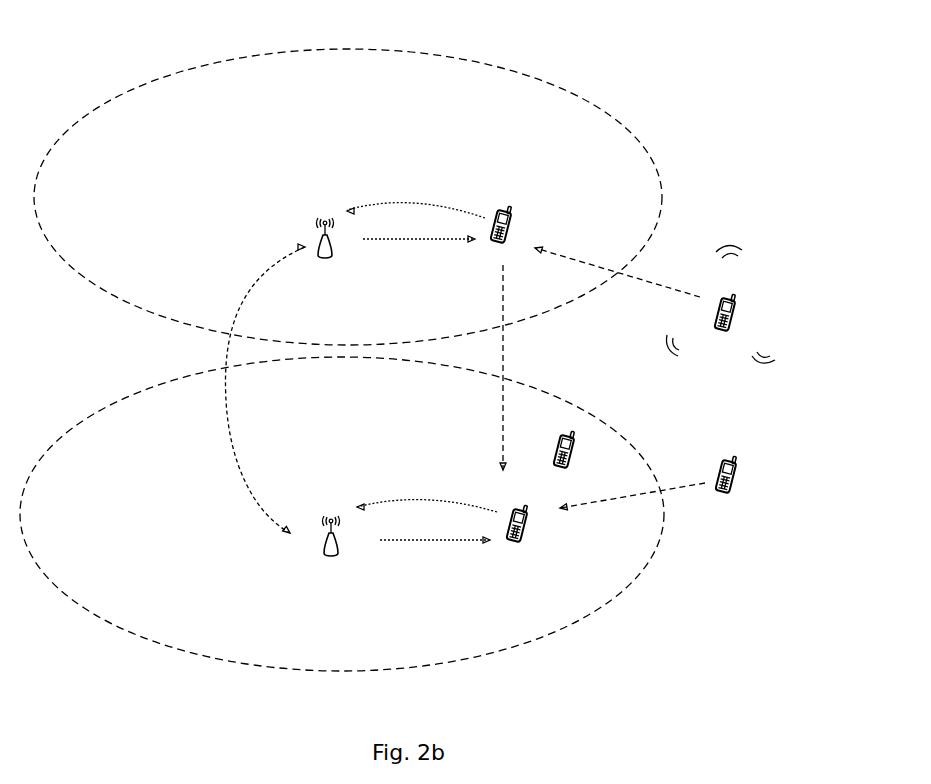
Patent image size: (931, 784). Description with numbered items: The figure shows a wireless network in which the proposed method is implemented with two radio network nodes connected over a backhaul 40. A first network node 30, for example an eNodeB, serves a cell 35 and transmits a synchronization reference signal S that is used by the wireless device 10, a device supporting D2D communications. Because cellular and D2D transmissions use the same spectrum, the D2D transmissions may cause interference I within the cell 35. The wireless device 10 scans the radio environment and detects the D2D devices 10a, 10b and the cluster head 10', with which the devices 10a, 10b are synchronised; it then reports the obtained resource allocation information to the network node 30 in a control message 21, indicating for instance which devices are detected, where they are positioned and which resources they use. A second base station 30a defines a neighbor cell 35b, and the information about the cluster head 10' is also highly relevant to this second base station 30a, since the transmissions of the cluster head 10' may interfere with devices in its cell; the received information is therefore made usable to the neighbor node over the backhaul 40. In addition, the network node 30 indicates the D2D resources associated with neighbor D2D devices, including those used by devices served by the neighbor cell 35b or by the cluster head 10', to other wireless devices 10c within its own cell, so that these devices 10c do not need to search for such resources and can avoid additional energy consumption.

The neighbor cell 35b is at (118, 97).
The cell 35 is at (92, 417).
The second base station 30a is at (318, 246).
The network node 30 is at (339, 548).
The backhaul 40 is at (228, 427).
The control message 21 is at (422, 366).
The synchronization reference signal S is at (423, 500).
The interference I is at (602, 388).
The D2D device 10a is at (511, 222).
The cluster head 10' is at (743, 304).
The D2D device within the cell 10c is at (575, 440).
The D2D device 10b is at (737, 470).
The wireless device 10 is at (556, 547).